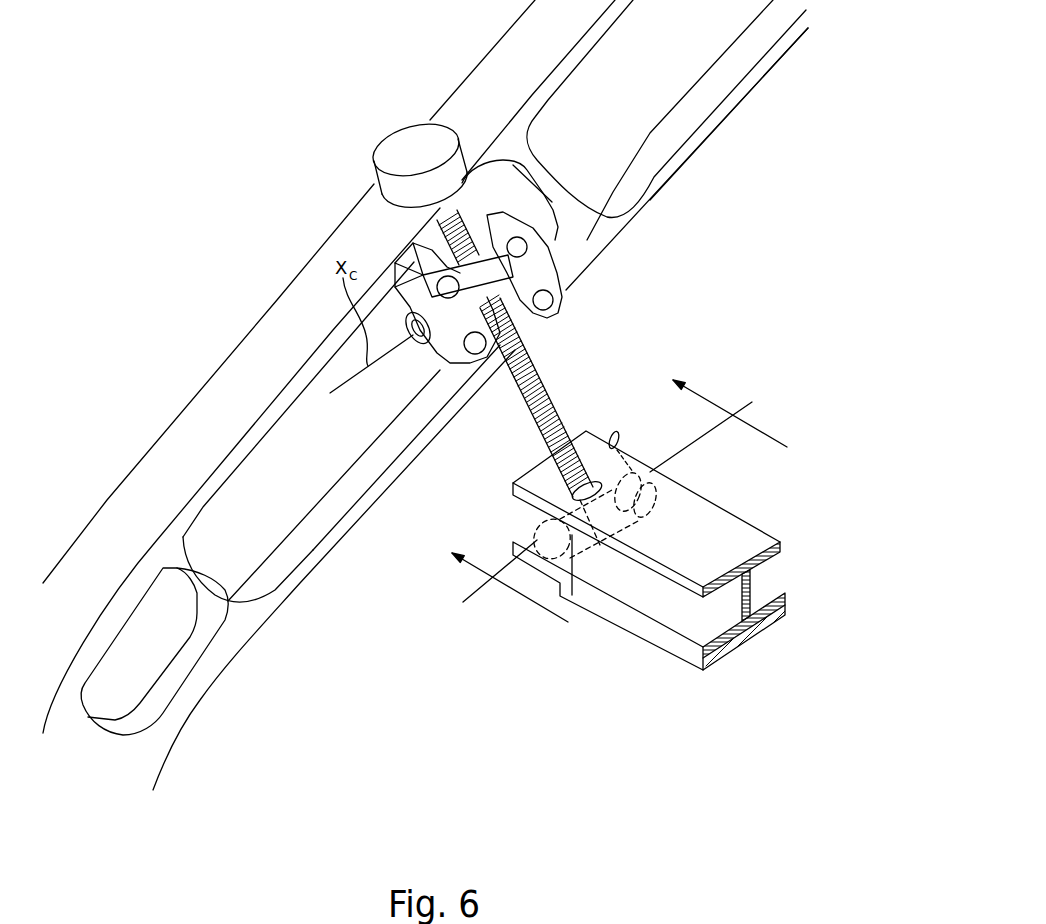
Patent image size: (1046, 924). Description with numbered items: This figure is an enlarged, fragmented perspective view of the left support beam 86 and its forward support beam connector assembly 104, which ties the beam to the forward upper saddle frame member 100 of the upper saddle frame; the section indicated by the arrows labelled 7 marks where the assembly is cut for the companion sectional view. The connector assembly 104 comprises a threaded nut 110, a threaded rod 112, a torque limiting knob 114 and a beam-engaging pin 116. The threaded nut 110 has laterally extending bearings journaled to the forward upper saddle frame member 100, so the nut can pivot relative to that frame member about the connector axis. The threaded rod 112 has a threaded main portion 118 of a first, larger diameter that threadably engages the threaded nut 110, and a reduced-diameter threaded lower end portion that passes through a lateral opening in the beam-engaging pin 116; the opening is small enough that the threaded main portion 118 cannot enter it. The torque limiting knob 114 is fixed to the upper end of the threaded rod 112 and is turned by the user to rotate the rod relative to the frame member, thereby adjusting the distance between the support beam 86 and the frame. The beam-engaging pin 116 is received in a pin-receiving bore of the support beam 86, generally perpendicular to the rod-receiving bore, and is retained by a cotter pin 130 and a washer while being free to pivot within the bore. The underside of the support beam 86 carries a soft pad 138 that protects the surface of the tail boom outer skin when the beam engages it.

The forward upper saddle frame member 100 is at (278, 336).
The forward support beam connector assembly 104 is at (497, 383).
The threaded nut 110 is at (420, 340).
The threaded rod 112 is at (543, 373).
The torque limiting knob 114 is at (403, 143).
The beam-engaging pin 116 is at (584, 527).
The threaded main portion 118 is at (553, 402).
The cotter pin 130 is at (620, 440).
The left support beam 86 is at (742, 535).
The soft pad 138 is at (640, 637).
The section line 7- 7 is at (613, 489).